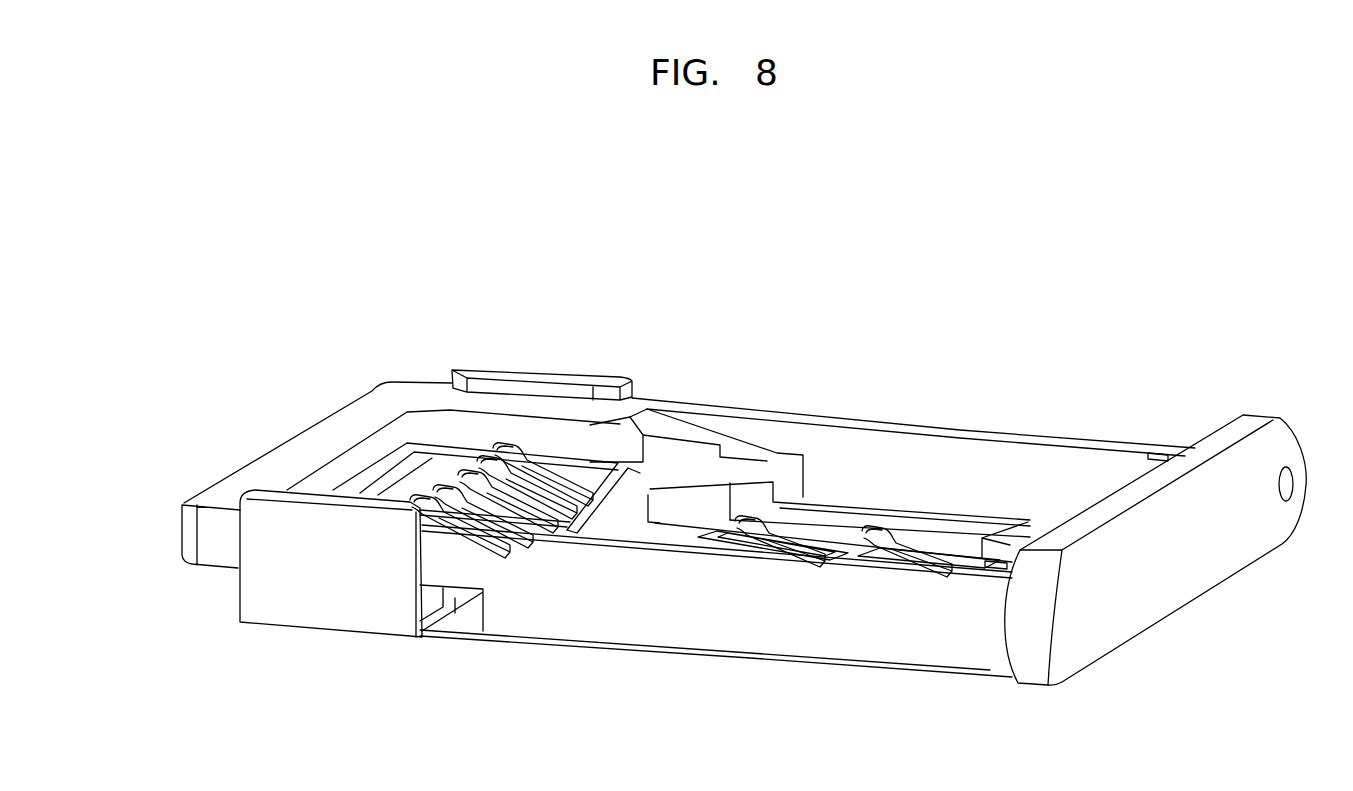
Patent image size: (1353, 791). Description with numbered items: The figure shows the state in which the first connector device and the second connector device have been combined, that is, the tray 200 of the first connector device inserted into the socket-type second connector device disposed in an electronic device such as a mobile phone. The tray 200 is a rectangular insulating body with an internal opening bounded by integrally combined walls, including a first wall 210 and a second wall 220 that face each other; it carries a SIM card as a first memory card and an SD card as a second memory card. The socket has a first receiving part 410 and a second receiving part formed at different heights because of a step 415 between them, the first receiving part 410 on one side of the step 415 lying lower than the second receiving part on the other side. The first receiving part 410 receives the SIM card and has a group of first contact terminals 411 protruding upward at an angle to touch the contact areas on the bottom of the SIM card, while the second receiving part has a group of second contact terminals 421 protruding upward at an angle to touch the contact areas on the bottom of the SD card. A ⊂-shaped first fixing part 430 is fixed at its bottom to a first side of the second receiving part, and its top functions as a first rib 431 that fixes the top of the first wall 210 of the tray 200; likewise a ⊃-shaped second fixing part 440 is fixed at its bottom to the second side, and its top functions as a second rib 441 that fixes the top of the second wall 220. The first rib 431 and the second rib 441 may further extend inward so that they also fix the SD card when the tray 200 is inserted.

The tray 200 is at (187, 530).
The first wall 210 is at (623, 563).
The second wall 220 is at (845, 422).
The first receiving part 410 is at (873, 660).
The first contact terminals 411 is at (877, 530).
The step 415 is at (627, 512).
The second contact terminals 421 is at (465, 467).
The first fixing part 430 is at (327, 570).
The first rib 431 is at (282, 493).
The second fixing part 440 is at (632, 397).
The second rib 441 is at (475, 369).